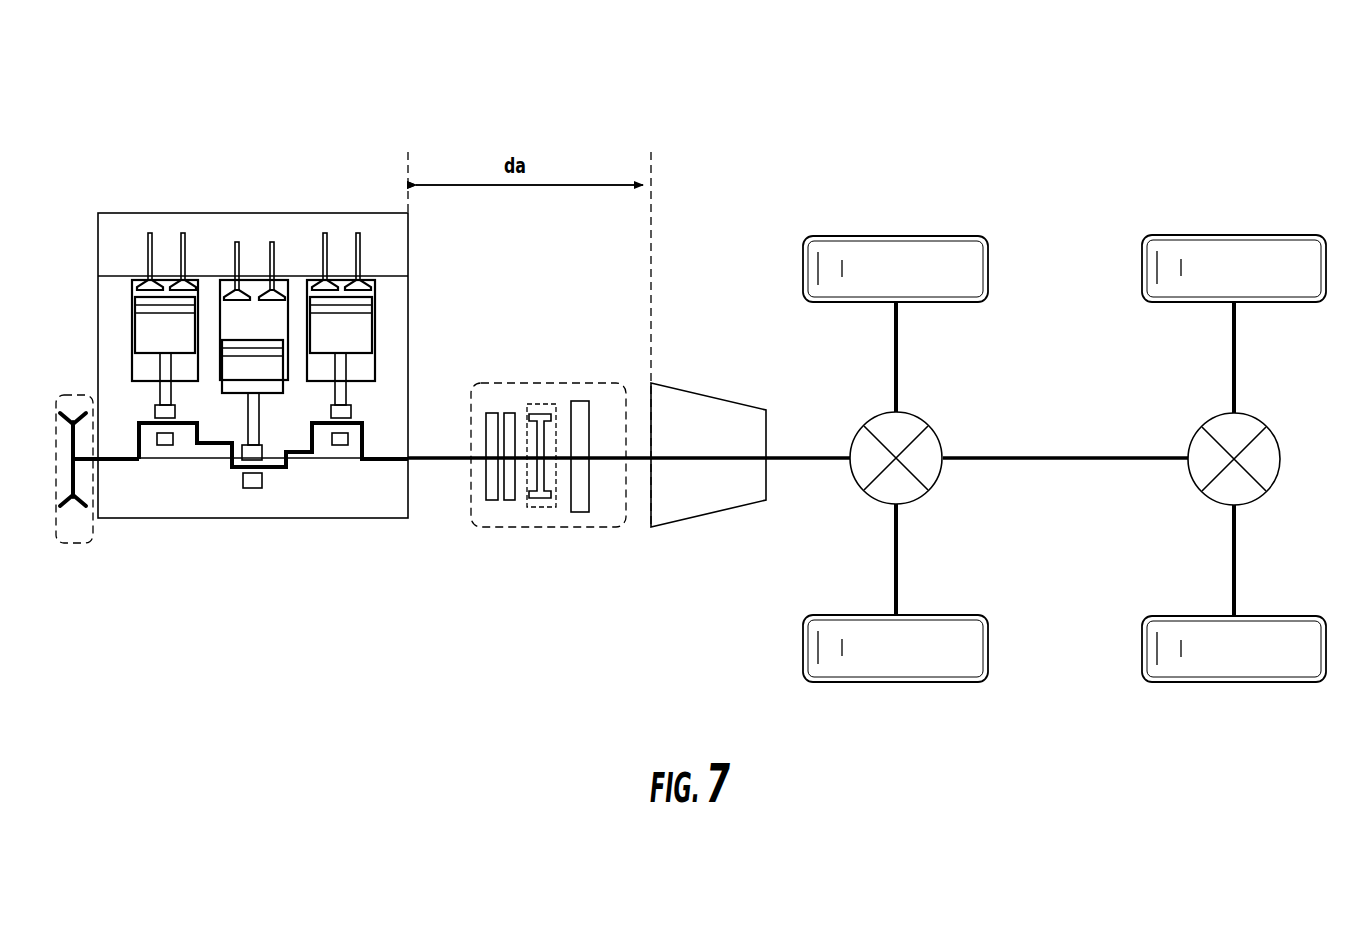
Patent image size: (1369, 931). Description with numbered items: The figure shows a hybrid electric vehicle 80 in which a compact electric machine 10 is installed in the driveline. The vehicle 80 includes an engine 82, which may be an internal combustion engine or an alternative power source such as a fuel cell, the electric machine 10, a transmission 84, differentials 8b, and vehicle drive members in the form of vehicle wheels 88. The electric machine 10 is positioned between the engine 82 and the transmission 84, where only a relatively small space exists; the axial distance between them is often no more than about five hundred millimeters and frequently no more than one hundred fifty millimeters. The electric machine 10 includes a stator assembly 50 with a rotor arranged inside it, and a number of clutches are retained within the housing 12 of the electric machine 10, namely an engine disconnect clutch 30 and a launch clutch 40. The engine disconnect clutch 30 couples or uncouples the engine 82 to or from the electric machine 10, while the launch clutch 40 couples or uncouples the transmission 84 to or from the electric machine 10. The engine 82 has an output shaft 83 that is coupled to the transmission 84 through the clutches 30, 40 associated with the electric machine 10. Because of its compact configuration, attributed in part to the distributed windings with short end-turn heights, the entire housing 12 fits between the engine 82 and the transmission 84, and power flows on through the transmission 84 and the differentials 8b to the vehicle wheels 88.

The hybrid electric vehicle 80 is at (1108, 132).
The engine 82 is at (267, 212).
The output shaft 83 is at (441, 456).
The electric machine 10 is at (538, 381).
The housing 12 is at (608, 381).
The engine disconnect clutch 30 is at (508, 500).
The stator assembly 50 is at (538, 507).
The launch clutch 40 is at (580, 512).
The transmission 84 is at (733, 401).
The differential 8b is at (923, 492).
The vehicle wheels 88 is at (1324, 237).